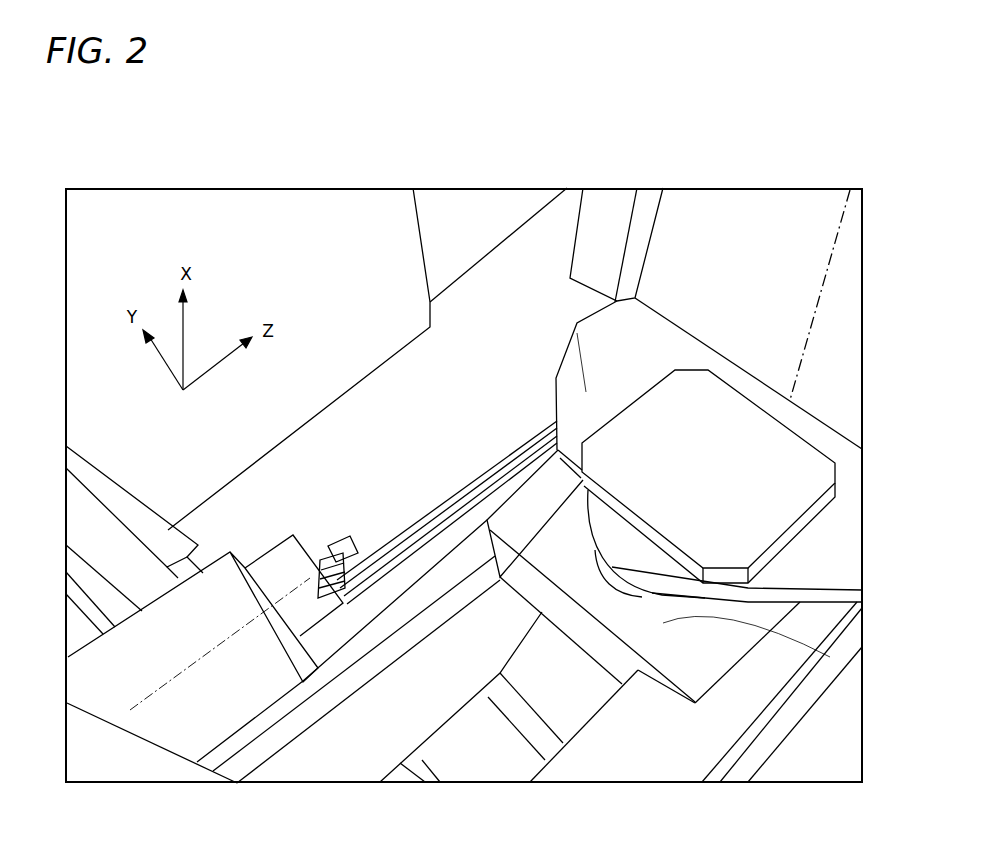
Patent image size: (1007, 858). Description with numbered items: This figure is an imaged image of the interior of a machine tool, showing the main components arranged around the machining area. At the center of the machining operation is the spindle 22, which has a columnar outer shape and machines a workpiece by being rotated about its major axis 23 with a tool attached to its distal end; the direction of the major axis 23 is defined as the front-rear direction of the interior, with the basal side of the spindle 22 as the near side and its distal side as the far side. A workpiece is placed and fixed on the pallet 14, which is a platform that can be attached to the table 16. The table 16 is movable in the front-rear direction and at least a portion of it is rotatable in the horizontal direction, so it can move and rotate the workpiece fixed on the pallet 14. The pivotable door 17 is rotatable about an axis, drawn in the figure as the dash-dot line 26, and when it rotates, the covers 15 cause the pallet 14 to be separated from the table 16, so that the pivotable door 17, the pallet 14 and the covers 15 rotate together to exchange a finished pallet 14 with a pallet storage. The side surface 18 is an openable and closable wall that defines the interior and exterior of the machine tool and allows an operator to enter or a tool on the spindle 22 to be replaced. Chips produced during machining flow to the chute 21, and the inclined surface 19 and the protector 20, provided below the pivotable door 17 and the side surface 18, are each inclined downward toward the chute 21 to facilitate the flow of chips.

The pallet 14 is at (757, 503).
The covers 15 is at (583, 320).
The table 16 is at (793, 574).
The pivotable door 17 is at (826, 394).
The side surface 18 is at (214, 252).
The inclined surface 19 is at (390, 427).
The protector 20 is at (448, 570).
The chute 21 is at (533, 677).
The spindle 22 is at (247, 680).
The major axis 23 is at (148, 693).
The rotation axis 26 is at (822, 292).